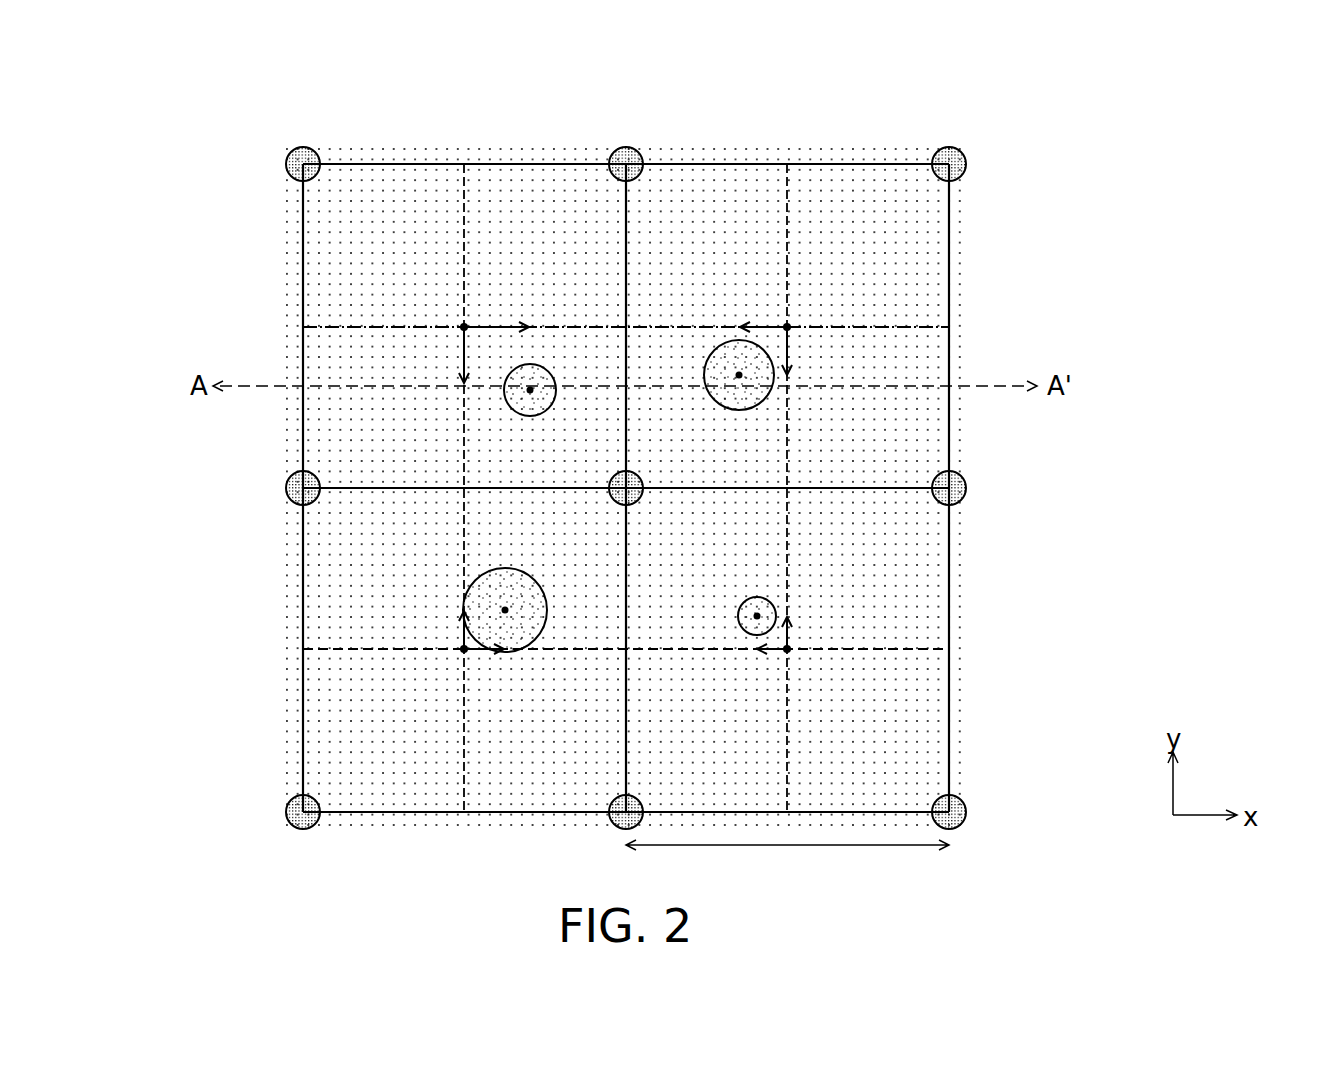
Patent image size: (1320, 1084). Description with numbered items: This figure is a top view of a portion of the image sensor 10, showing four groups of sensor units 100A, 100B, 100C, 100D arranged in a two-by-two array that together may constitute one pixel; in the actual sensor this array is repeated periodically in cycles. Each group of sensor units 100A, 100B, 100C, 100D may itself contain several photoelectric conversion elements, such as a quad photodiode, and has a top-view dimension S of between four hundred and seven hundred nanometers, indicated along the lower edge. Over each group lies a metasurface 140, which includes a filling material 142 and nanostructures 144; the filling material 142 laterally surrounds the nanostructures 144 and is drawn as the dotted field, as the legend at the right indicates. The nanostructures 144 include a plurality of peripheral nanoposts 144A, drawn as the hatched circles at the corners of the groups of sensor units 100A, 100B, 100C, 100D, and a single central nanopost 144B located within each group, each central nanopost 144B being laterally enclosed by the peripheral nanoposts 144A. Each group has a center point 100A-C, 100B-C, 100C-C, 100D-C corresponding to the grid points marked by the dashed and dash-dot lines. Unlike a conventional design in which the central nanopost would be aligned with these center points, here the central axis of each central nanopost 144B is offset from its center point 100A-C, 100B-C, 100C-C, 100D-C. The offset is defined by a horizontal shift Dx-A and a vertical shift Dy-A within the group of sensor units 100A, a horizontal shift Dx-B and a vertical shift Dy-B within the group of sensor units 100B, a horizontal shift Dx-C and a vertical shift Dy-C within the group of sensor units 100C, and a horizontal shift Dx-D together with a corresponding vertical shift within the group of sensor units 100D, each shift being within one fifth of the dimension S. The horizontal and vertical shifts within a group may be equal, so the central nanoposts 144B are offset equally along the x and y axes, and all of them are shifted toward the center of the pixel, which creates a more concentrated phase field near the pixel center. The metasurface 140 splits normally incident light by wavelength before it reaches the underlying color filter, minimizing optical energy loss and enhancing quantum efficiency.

The image sensor 10 is at (188, 128).
The group of sensor units 100A is at (300, 278).
The group of sensor units 100B is at (952, 277).
The group of sensor units 100C is at (300, 700).
The group of sensor units 100D is at (952, 700).
The center point 100A-C is at (462, 324).
The center point 100B-C is at (789, 324).
The center point 100C-C is at (462, 652).
The center point 100D-C is at (789, 652).
The metasurface 140 is at (1120, 60).
The filling material 142 is at (752, 442).
The nanostructures 144 is at (1198, 72).
The peripheral nanoposts 144A is at (775, 450).
The central nanopost 144B is at (863, 375).
The horizontal shift Dx-A is at (501, 311).
The vertical shift Dy-A is at (430, 355).
The horizontal shift Dx-B is at (765, 327).
The vertical shift Dy-B is at (819, 351).
The horizontal shift Dx-C is at (503, 666).
The vertical shift Dy-C is at (462, 630).
The horizontal shift Dx-D is at (775, 651).
The dimension S is at (787, 858).